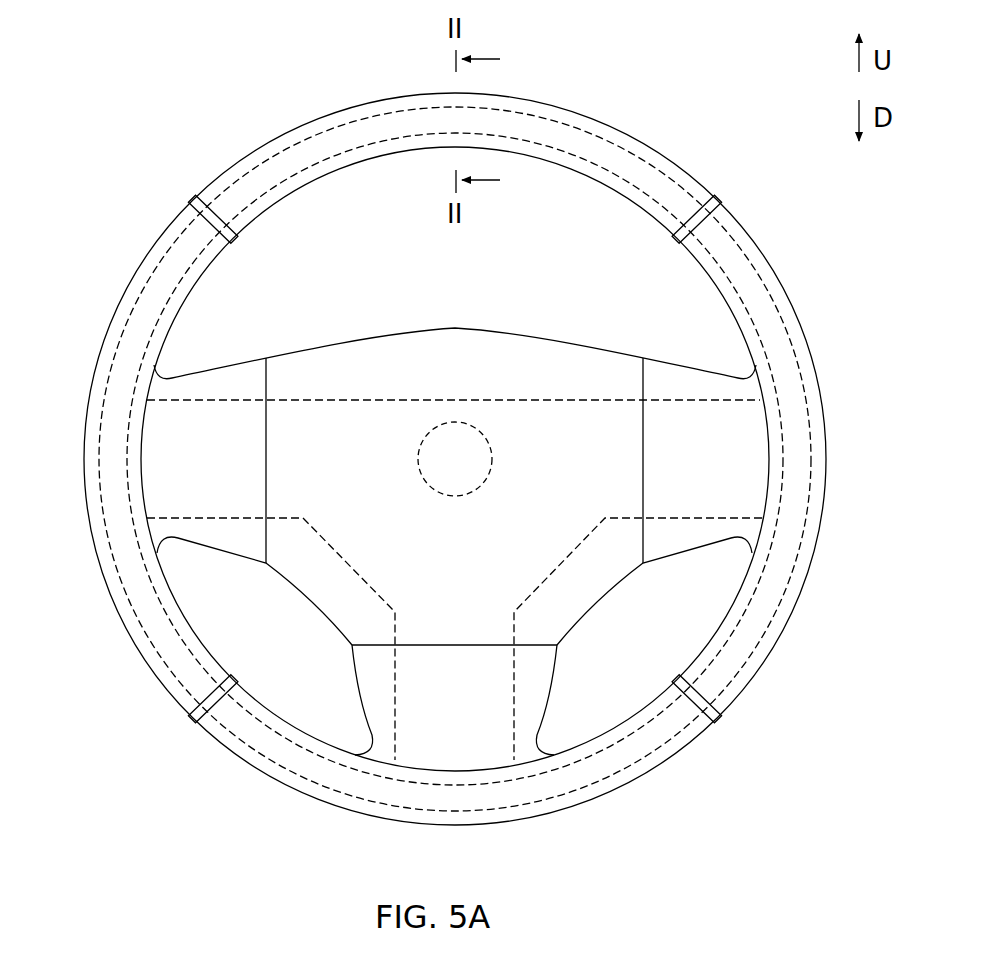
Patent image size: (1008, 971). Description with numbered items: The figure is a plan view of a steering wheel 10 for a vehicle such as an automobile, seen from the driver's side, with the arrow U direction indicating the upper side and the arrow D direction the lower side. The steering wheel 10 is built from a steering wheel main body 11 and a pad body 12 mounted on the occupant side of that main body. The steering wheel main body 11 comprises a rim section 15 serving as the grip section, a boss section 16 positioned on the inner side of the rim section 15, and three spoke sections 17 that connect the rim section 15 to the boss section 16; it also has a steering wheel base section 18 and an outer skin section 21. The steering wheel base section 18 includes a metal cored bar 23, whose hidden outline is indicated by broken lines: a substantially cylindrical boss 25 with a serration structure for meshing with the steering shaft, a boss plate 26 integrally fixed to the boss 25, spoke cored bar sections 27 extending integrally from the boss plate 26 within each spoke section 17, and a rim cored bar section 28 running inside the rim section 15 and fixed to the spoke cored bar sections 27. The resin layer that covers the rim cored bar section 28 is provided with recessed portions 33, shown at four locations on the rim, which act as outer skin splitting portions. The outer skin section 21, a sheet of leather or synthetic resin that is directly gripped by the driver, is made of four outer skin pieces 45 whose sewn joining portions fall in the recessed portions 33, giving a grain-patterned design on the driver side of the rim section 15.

The steering wheel 10 is at (607, 56).
The steering wheel main body 11 is at (765, 257).
The pad body 12 is at (532, 355).
The rim section 15 is at (827, 402).
The boss section 16 is at (395, 328).
The spoke section 17 is at (248, 357).
The steering wheel base section 18 is at (760, 668).
The outer skin section 21 is at (790, 313).
The cored bar 23 is at (800, 547).
The boss 25 is at (450, 420).
The boss plate 26 is at (487, 397).
The spoke cored bar section 27 is at (165, 400).
The rim cored bar section 28 is at (808, 470).
The recessed portion 33 is at (195, 203).
The outer skin piece 45 is at (625, 133).